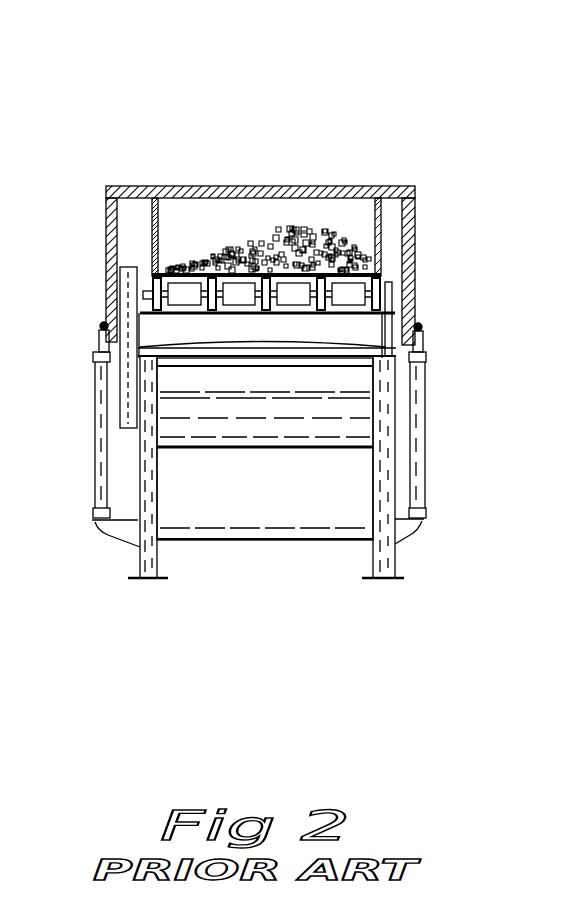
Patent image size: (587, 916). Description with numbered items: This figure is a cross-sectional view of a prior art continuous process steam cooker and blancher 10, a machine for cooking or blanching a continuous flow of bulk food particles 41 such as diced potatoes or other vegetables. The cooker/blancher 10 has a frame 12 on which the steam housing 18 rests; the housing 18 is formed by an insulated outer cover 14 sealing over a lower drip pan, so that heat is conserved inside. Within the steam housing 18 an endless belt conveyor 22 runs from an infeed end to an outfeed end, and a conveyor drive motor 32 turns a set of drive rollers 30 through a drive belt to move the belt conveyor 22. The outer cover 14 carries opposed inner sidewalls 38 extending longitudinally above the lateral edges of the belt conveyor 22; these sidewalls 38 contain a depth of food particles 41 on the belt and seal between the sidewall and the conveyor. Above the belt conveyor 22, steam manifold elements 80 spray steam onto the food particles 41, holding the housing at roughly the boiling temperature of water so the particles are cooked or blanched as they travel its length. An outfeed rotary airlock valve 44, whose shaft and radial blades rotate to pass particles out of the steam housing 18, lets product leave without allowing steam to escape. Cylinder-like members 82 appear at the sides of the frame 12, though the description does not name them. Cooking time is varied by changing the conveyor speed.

The continuous process steam cooker and blancher 10 is at (251, 70).
The frame 12 is at (166, 497).
The outer cover 14 is at (143, 186).
The steam housing 18 is at (135, 231).
The endless belt conveyor 22 is at (392, 288).
The drive rollers 30 is at (143, 296).
The conveyor drive motor 32 is at (119, 416).
The inner sidewalls 38 is at (152, 217).
The bulk food particles 41 is at (326, 250).
The outfeed rotary airlock valve 44 is at (273, 428).
The steam manifold elements 80 is at (262, 207).
The hydraulic cylinders 82 is at (98, 466).